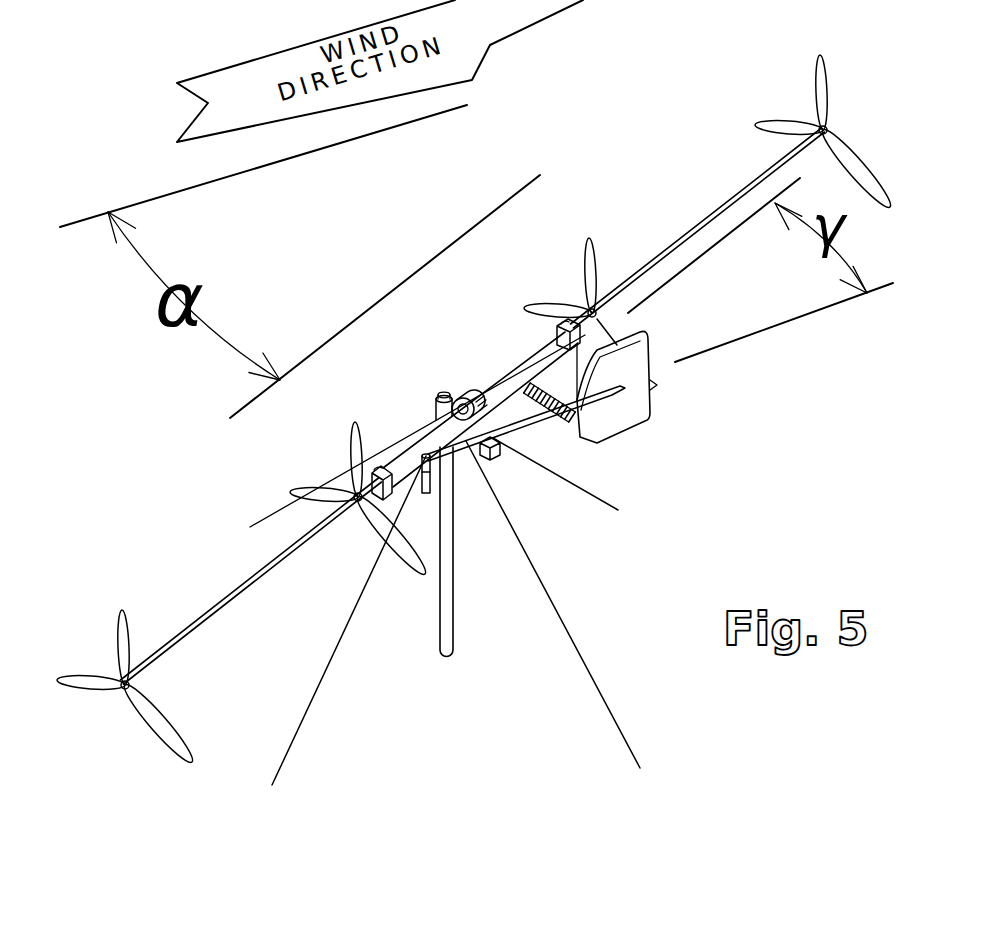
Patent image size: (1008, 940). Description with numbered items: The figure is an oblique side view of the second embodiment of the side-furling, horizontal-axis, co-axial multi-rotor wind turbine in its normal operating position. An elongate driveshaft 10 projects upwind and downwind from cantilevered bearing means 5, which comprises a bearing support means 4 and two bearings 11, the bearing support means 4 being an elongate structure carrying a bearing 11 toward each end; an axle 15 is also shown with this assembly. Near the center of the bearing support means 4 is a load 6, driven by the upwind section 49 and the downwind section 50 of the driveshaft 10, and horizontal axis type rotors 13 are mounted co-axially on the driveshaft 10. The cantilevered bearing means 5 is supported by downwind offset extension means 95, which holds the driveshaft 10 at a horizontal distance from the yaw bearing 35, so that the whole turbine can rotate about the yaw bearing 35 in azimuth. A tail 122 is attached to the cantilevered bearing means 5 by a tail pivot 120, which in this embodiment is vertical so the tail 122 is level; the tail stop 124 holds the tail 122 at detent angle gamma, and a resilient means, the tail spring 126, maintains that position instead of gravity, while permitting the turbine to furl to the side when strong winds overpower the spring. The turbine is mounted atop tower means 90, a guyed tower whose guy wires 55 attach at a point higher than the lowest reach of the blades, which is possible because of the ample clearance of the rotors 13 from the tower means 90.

The bearing support means 4 is at (550, 396).
The cantilevered bearing means 5 is at (398, 412).
The load 6 is at (478, 388).
The elongate driveshaft 10 is at (251, 581).
The bearing 11 is at (557, 330).
The horizontal axis type rotor 13 is at (165, 722).
The axle 15 is at (518, 362).
The horizontally rotatable azimuthal directional orientation means (yaw bearing) 35 is at (455, 367).
The upwind section of the driveshaft 49 is at (193, 630).
The downwind section of the driveshaft 50 is at (708, 215).
The guy wires 55 is at (340, 477).
The tower means 90 is at (453, 610).
The downwind offset extension means 95 is at (445, 383).
The tail pivot 120 is at (427, 495).
The tail 122 is at (627, 435).
The tail stop 124 is at (490, 453).
The resilient means to hold tail in detent position angle gamma (tail spring) 126 is at (568, 422).